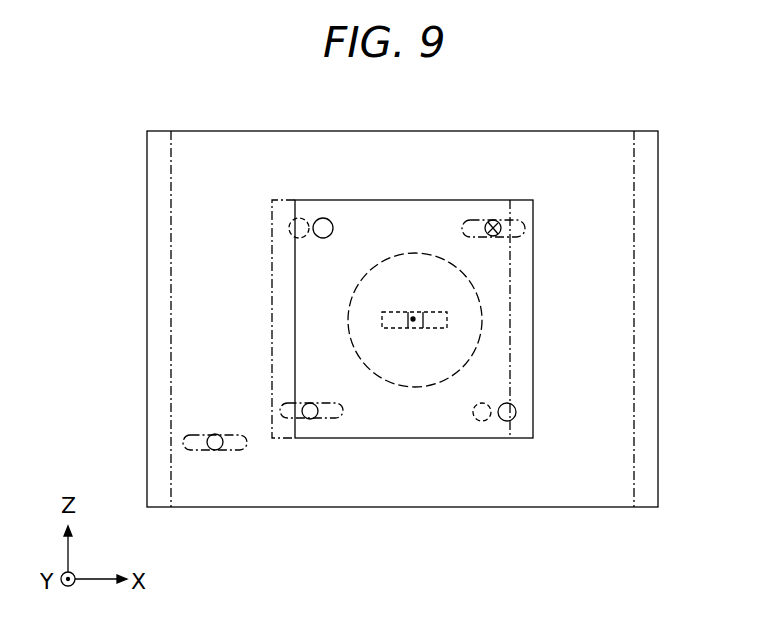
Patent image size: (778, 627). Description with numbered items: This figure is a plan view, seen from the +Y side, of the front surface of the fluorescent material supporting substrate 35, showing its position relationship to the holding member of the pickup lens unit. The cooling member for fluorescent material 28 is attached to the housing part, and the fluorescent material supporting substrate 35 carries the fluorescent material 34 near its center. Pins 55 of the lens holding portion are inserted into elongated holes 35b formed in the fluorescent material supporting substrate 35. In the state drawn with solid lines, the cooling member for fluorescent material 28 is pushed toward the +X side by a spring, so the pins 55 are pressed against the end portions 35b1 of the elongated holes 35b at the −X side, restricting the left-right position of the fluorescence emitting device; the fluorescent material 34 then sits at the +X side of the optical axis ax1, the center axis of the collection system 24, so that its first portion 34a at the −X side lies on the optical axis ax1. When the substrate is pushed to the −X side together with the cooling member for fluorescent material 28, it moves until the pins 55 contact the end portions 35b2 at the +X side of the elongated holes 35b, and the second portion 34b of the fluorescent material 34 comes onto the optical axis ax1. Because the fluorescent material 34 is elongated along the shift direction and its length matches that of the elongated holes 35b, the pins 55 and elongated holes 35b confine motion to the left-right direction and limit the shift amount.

The cooling member for fluorescent material 28 is at (633, 175).
The collection system 24 is at (424, 384).
The fluorescent material supporting substrate 35 is at (272, 200).
The elongated holes 35b is at (288, 422).
The end portions of the elongated holes at the −X side 35b1 is at (497, 220).
The end portions of the elongated holes at the +X side 35b2 is at (514, 220).
The pins 55 is at (312, 420).
The fluorescent material 34 is at (450, 317).
The first portion 34a is at (410, 329).
The second portion 34b is at (437, 323).
The optical axis ax1 is at (413, 319).